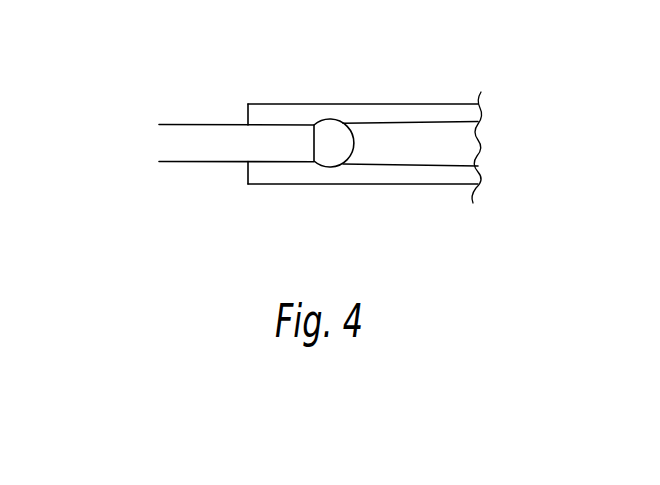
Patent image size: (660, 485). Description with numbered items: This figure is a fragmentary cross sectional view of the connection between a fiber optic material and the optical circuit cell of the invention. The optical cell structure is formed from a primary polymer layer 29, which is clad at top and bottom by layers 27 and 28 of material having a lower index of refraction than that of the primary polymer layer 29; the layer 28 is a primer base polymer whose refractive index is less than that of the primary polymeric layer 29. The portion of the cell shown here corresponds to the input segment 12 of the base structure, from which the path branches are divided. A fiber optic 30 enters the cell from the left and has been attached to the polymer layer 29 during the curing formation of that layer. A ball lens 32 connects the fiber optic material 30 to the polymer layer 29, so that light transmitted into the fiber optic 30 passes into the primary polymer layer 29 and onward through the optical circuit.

The input segment 12 is at (399, 102).
The cladding layer 27 is at (481, 113).
The primer base polymer layer 28 is at (428, 175).
The primary polymer layer 29 is at (458, 143).
The fiber optic 30 is at (207, 150).
The ball lens 32 is at (329, 147).